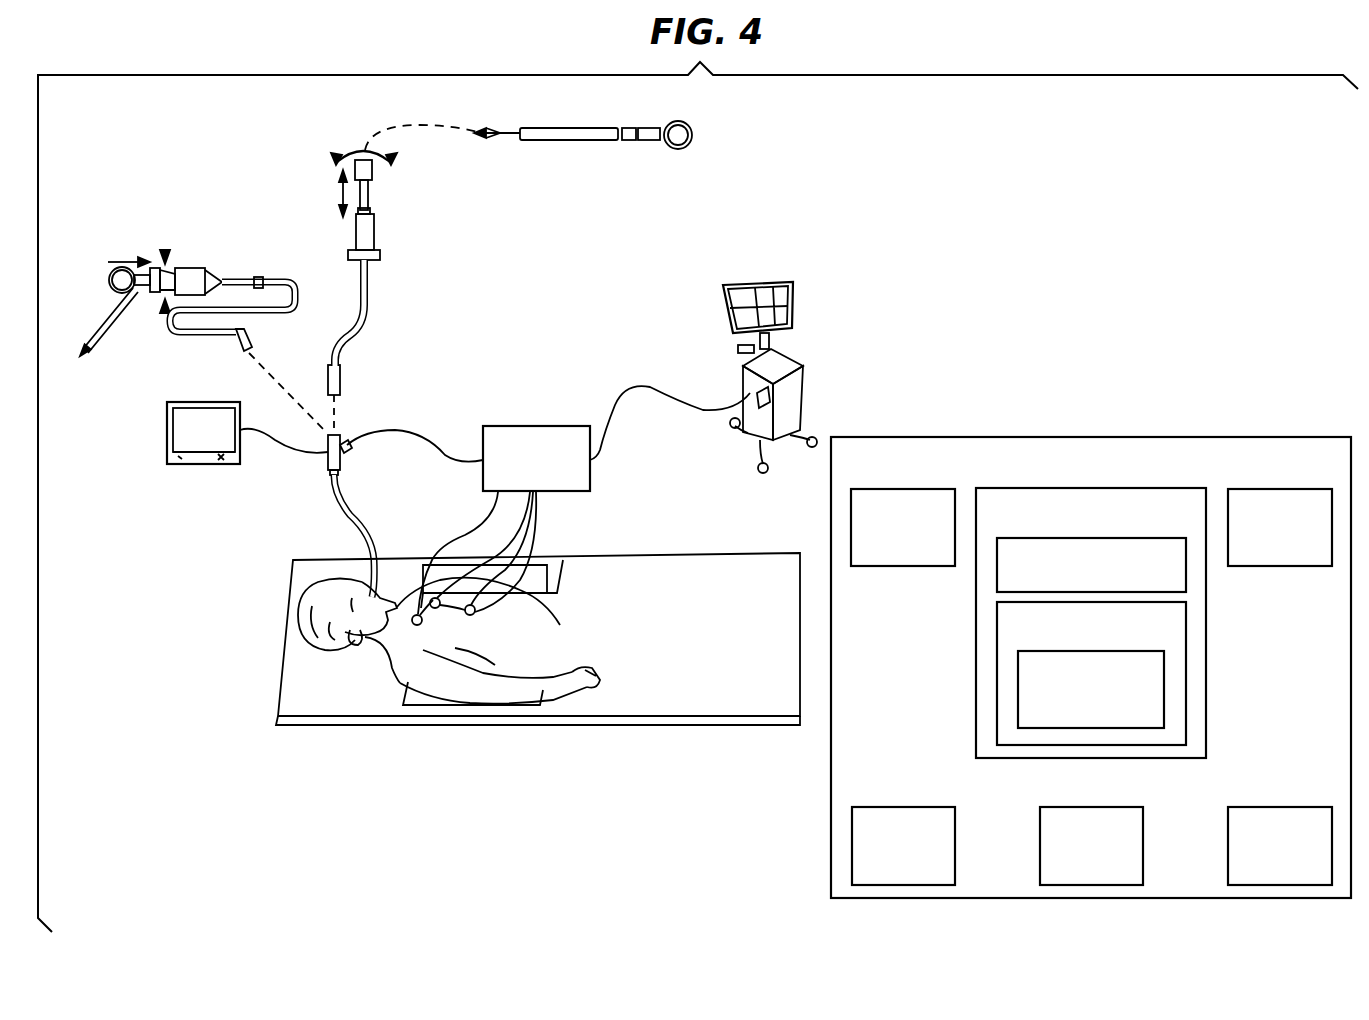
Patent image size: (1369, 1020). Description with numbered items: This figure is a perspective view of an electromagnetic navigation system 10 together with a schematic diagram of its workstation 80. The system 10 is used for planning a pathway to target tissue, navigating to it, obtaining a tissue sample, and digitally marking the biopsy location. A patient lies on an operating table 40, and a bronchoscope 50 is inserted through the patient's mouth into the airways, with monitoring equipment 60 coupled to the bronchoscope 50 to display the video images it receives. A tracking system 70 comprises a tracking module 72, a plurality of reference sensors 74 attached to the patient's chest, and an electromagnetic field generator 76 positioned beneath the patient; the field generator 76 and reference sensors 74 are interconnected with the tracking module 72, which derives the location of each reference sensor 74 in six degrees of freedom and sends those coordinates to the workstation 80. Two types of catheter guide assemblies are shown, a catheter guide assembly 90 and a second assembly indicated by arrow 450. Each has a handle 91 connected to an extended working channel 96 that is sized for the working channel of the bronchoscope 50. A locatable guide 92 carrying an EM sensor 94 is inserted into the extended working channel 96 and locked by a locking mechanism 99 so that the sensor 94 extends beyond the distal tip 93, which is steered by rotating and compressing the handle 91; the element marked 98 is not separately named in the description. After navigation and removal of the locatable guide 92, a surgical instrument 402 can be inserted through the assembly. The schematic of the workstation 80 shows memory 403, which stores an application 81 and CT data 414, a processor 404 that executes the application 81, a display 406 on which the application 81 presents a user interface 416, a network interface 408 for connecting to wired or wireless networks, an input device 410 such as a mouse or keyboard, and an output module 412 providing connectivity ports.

The electromagnetic navigation system 10 is at (834, 184).
The operating table 40 is at (293, 676).
The bronchoscope 50 is at (338, 503).
The monitoring equipment 60 is at (175, 464).
The tracking system 70 is at (587, 354).
The tracking module 72 is at (547, 471).
The reference sensors 74 is at (470, 615).
The electromagnetic field generator 76 is at (415, 706).
The workstation 80 is at (808, 388).
The application 81 is at (996, 630).
The catheter guide assembly 90 is at (125, 213).
The handle 91 is at (215, 246).
The locatable guide 92 is at (237, 276).
The distal tip 93 is at (243, 354).
The EM sensor 94 is at (248, 346).
The extended working channel 96 is at (293, 302).
The sensor / rotation indicator 98 is at (102, 342).
The locking mechanism 99 is at (262, 279).
The surgical instrument 402 is at (693, 133).
The memory 403 is at (1175, 487).
The processor 404 is at (900, 489).
The display 406 is at (900, 807).
The network interface 408 is at (1282, 489).
The input device 410 is at (1092, 807).
The output module 412 is at (1280, 807).
The CT data 414 is at (1140, 538).
The user interface 416 is at (1165, 668).
The catheter assembly 450 is at (387, 290).